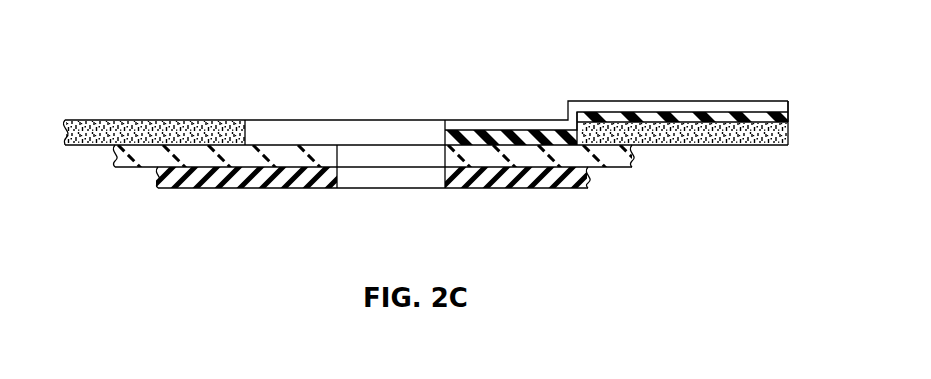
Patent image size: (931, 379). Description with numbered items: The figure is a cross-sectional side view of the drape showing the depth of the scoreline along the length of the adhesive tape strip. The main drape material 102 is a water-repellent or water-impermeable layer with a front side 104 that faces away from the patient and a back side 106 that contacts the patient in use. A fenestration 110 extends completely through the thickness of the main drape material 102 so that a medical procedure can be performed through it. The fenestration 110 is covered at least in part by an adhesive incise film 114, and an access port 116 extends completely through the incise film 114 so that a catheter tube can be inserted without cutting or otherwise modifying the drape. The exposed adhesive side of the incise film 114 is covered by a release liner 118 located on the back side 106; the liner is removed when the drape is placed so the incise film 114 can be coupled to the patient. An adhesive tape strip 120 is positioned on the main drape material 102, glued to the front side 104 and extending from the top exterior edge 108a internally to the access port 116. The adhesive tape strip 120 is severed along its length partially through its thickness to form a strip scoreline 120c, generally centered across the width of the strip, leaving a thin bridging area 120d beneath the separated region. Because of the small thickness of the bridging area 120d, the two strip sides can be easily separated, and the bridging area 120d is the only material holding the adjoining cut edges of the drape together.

The main drape material 102 is at (77, 145).
The front side 104 is at (528, 60).
The back side 106 is at (660, 272).
The top exterior edge 108a is at (788, 110).
The fenestration 110 is at (292, 108).
The adhesive incise film 114 is at (130, 157).
The access port 116 is at (387, 175).
The release liner 118 is at (217, 178).
The adhesive tape strip 120 is at (742, 97).
The strip scoreline 120c is at (647, 112).
The bridging area 120d is at (745, 118).